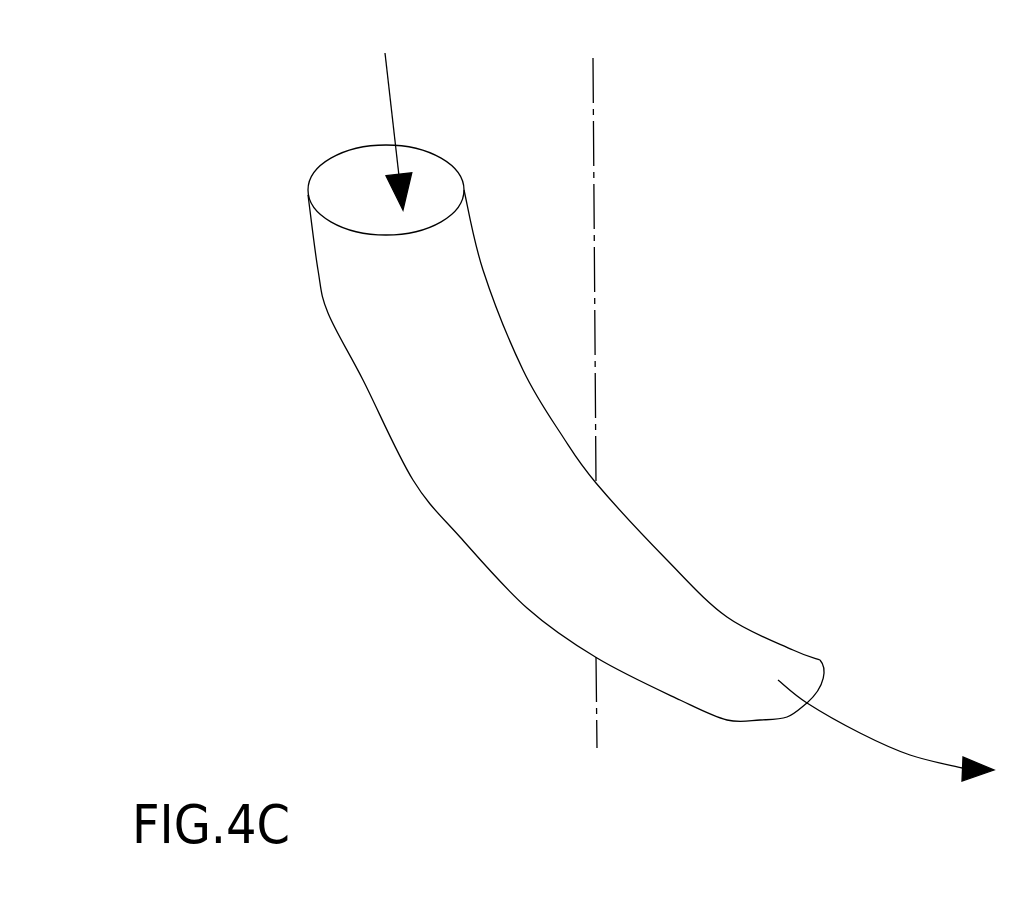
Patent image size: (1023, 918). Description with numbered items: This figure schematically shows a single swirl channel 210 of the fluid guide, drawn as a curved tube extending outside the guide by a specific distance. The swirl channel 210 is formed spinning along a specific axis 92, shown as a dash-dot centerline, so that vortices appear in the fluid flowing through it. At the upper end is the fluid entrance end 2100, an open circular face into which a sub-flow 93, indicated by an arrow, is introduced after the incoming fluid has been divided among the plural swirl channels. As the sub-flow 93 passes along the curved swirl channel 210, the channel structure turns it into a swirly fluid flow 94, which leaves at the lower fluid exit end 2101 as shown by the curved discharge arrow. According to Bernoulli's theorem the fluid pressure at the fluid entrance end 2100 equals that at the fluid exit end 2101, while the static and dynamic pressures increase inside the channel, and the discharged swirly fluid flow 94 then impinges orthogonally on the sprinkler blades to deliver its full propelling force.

The swirl channel 210 is at (342, 308).
The fluid entrance end 2100 is at (423, 173).
The fluid exit end 2101 is at (788, 713).
The sub-flow 93 is at (390, 102).
The specific axis 92 is at (595, 268).
The swirly fluid flow 94 is at (865, 735).